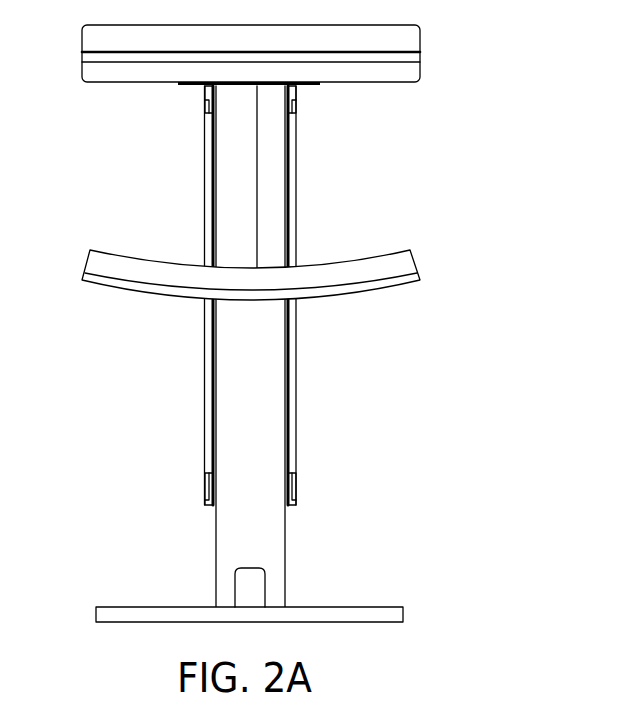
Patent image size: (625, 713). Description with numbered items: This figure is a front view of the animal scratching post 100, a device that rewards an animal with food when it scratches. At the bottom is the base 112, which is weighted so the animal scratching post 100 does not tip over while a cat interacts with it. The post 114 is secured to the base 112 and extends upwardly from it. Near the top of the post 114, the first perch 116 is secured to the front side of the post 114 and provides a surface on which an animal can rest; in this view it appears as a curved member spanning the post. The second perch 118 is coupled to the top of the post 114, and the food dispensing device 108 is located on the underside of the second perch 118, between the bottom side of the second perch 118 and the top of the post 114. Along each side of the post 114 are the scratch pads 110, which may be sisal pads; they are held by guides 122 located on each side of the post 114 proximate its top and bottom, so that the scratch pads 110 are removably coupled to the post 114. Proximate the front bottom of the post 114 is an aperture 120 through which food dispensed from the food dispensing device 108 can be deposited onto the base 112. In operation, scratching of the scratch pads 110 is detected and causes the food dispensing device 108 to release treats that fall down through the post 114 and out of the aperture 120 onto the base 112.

The animal scratching post 100 is at (483, 139).
The food dispensing device 108 is at (257, 86).
The scratch pads 110 is at (202, 369).
The base 112 is at (91, 614).
The post 114 is at (213, 542).
The first perch 116 is at (84, 262).
The second perch 118 is at (82, 44).
The aperture 120 is at (267, 578).
The guides 122 is at (203, 106).